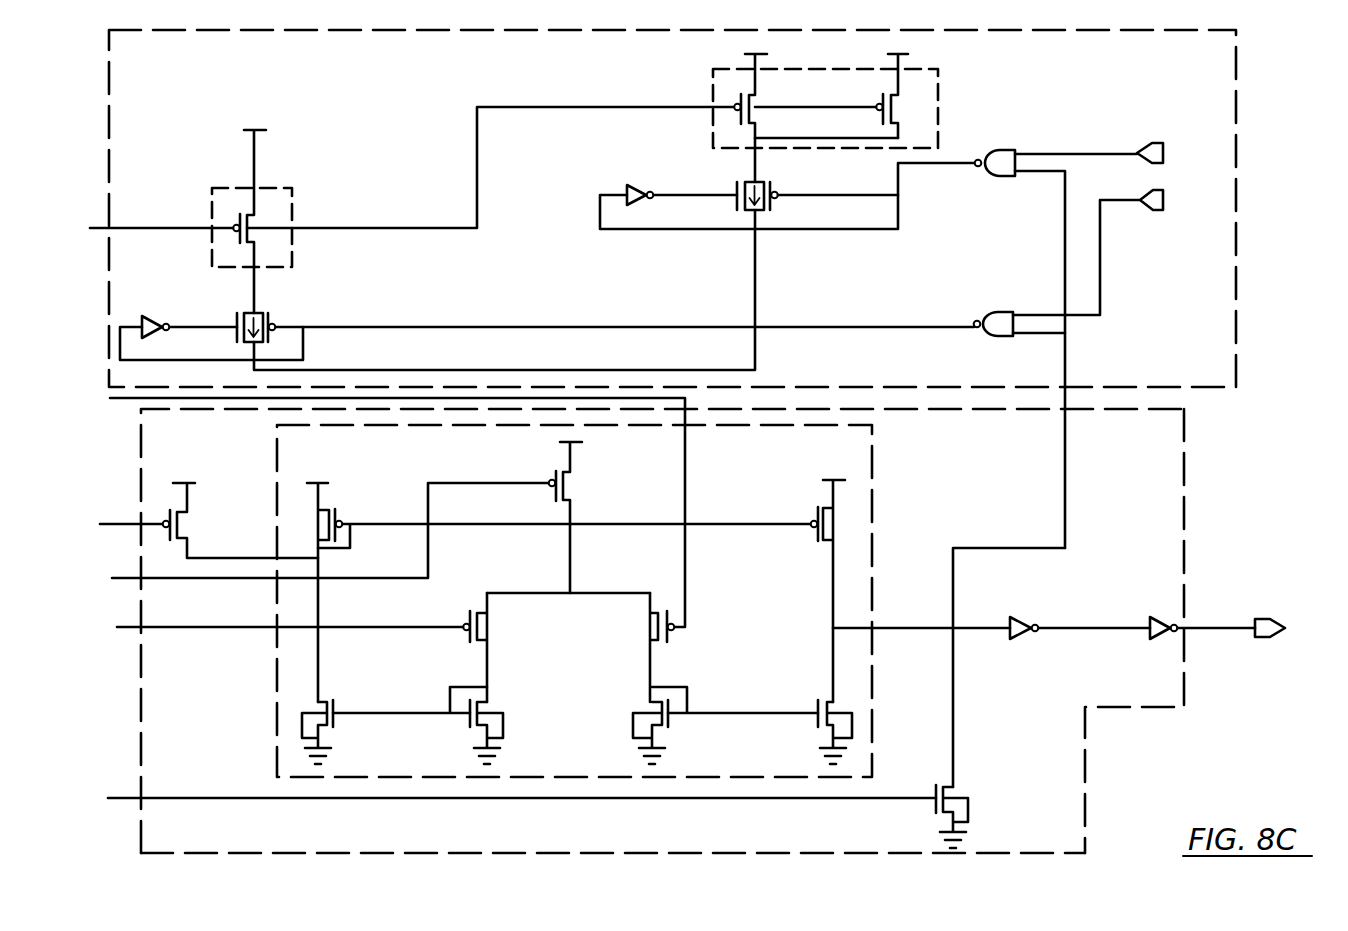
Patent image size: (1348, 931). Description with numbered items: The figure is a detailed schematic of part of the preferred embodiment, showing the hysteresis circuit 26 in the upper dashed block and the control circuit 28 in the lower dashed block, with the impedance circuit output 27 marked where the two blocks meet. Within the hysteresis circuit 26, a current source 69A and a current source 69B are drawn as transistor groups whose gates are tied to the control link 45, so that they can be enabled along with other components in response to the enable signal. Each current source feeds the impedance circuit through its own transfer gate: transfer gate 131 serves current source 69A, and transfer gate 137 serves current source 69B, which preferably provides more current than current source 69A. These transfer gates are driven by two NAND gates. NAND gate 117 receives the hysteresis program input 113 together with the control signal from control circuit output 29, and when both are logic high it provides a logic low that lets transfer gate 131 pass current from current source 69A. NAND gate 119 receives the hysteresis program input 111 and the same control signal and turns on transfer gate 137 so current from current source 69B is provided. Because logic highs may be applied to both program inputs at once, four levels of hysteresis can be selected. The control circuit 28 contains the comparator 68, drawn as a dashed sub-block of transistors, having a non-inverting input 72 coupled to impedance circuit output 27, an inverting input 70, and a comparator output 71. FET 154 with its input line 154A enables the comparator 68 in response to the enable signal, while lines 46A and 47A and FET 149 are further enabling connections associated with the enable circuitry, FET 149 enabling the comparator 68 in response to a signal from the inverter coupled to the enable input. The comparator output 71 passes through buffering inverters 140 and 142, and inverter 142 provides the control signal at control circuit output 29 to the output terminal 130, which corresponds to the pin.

The hysteresis circuit 26 is at (1238, 373).
The impedance circuit output 27 is at (120, 399).
The control circuit 28 is at (1188, 444).
The control link 45 is at (131, 227).
The current source 69A is at (223, 188).
The current source 69B is at (940, 77).
The transfer gate 131 is at (272, 316).
The transfer gate 137 is at (737, 183).
The NAND gate 119 is at (997, 178).
The NAND gate 117 is at (1005, 312).
The hysteresis program input 111 is at (1160, 146).
The hysteresis program input 113 is at (1160, 212).
The non-inverting input 72 is at (685, 456).
The comparator 68 is at (875, 479).
The FET 154 is at (187, 527).
The input line 154A is at (112, 522).
The input line 46A is at (121, 580).
The inverting input 70 is at (236, 630).
The comparator output 71 is at (962, 631).
The buffering inverter 140 is at (1020, 616).
The buffering inverter 142 is at (1150, 620).
The control circuit output 29 is at (1180, 622).
The output terminal 130 is at (1270, 618).
The FET 149 is at (968, 806).
The input line 47A is at (205, 800).